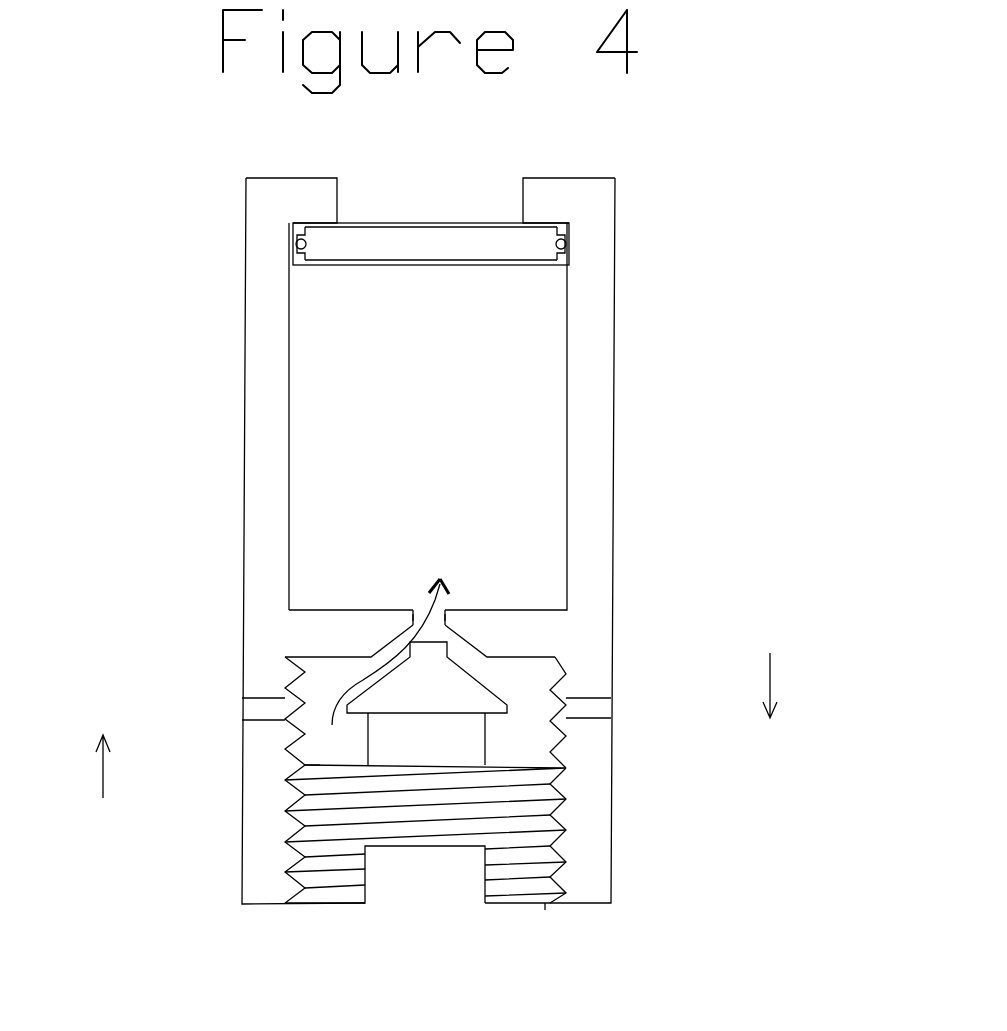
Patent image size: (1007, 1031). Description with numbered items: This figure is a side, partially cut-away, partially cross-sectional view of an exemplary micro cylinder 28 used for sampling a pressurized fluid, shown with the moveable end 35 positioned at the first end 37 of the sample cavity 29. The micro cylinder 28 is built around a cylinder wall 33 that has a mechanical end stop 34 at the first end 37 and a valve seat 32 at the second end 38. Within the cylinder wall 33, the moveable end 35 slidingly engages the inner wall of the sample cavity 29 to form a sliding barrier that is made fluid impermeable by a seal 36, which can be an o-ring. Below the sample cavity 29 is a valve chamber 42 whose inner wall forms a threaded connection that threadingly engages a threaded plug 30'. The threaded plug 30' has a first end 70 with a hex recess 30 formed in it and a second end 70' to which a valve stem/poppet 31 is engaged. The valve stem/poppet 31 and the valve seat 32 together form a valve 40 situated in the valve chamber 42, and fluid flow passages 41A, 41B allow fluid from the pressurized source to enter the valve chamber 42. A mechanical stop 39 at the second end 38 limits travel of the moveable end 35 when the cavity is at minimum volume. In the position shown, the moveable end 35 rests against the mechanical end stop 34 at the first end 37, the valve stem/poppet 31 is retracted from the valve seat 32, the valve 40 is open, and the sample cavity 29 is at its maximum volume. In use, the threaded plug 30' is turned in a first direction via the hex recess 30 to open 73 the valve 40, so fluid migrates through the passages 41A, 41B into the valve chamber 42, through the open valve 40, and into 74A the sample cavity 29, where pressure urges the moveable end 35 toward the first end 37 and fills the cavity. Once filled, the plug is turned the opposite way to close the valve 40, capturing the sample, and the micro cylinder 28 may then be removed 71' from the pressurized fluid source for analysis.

The micro cylinder 28 is at (640, 342).
The sample cavity 29 is at (515, 508).
The hex recess 30 is at (453, 875).
The threaded plug 30' is at (506, 834).
The valve stem/poppet 31 is at (507, 697).
The valve seat 32 is at (462, 634).
The cylinder wall 33 is at (245, 418).
The mechanical end stop 34 is at (338, 223).
The movable end 35 is at (530, 235).
The seal 36 is at (293, 238).
The first end 37 is at (238, 180).
The second end 38 is at (233, 642).
The mechanical stop 39 is at (482, 612).
The valve 40 is at (423, 613).
The fluid flow passage 41A is at (248, 718).
The fluid flow passage 41B is at (618, 703).
The valve chamber 42 is at (532, 750).
The first end of threaded plug 70 is at (610, 890).
The second end of threaded plug 70' is at (232, 776).
The removal of micro cylinder 71' is at (801, 685).
The opening of valve 73 is at (101, 781).
The fluid flow into sample cavity 74A is at (366, 672).